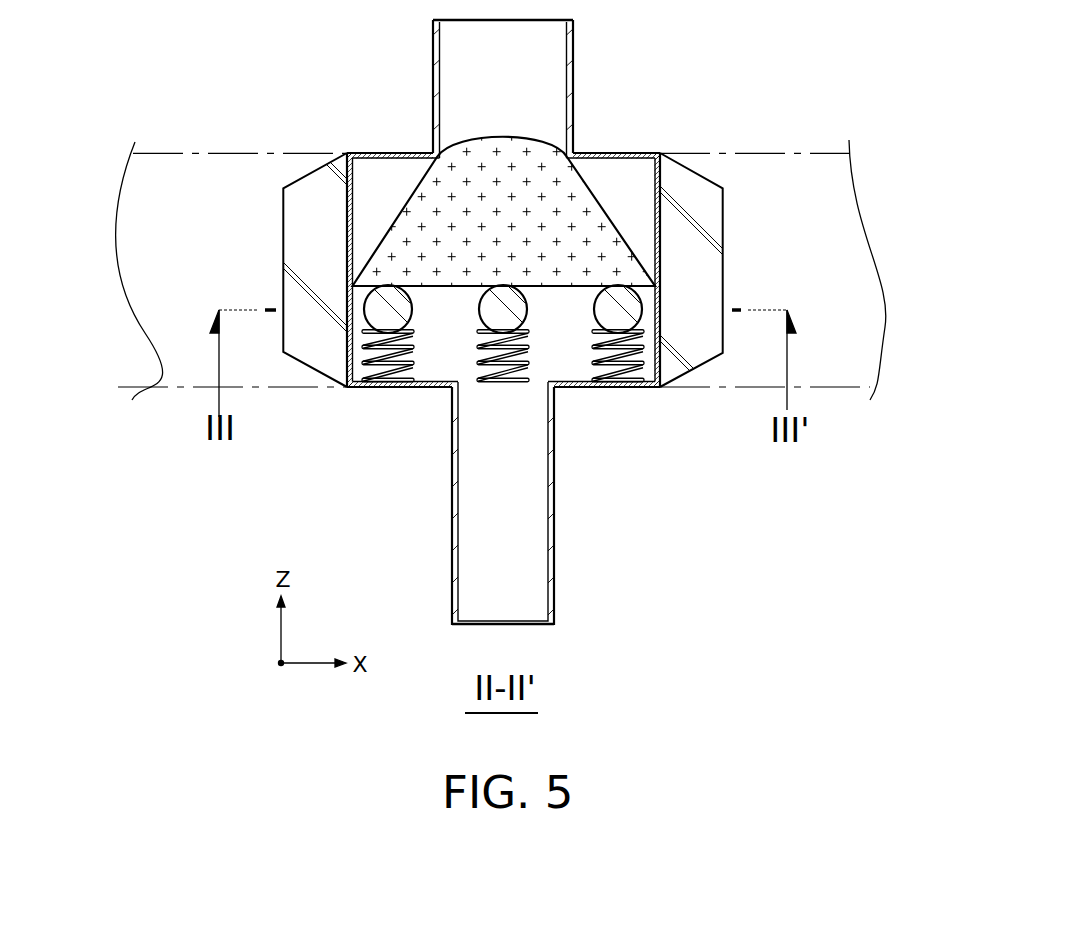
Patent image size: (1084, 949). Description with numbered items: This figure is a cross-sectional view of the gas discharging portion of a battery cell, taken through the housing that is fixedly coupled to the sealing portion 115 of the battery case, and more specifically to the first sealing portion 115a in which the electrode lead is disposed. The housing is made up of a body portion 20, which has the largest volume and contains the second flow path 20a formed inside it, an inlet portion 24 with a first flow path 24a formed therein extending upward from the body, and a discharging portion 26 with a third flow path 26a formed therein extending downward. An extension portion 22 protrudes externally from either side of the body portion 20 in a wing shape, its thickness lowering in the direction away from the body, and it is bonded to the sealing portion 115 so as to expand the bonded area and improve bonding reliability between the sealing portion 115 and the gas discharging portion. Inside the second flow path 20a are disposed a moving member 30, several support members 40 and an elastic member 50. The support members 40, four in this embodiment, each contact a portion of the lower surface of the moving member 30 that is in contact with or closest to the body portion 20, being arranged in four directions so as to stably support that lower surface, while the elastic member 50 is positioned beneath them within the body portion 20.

The sealing portion 115 is at (501, 227).
The first sealing portion 115a is at (225, 162).
The body portion 20 is at (600, 153).
The second flow path 20a is at (436, 330).
The extension portion 22 is at (690, 183).
The inlet portion 24 is at (433, 76).
The first flow path 24a is at (508, 66).
The discharging portion 26 is at (452, 547).
The third flow path 26a is at (508, 510).
The moving member 30 is at (417, 205).
The support member 40 is at (373, 309).
The elastic member 50 is at (362, 363).